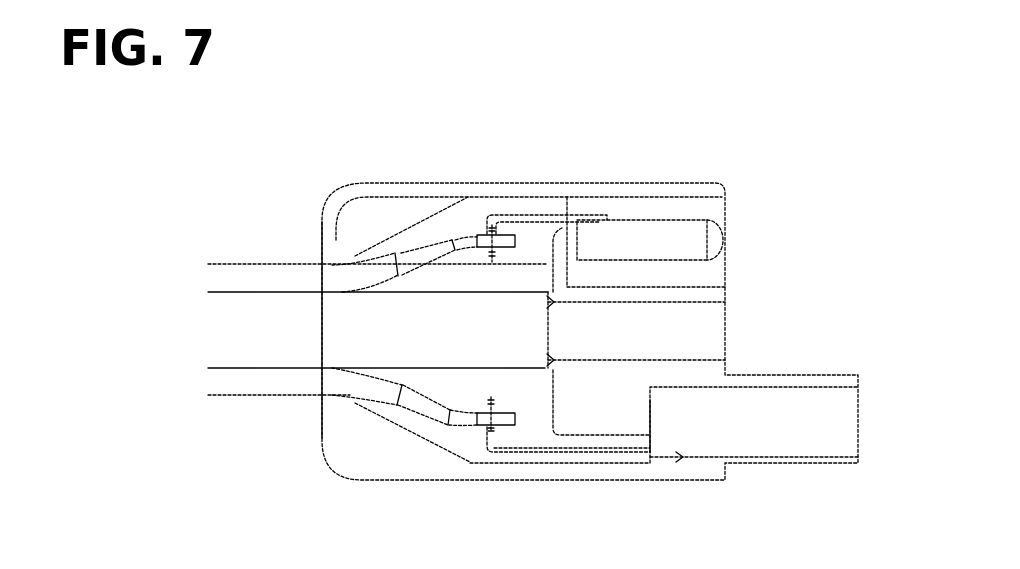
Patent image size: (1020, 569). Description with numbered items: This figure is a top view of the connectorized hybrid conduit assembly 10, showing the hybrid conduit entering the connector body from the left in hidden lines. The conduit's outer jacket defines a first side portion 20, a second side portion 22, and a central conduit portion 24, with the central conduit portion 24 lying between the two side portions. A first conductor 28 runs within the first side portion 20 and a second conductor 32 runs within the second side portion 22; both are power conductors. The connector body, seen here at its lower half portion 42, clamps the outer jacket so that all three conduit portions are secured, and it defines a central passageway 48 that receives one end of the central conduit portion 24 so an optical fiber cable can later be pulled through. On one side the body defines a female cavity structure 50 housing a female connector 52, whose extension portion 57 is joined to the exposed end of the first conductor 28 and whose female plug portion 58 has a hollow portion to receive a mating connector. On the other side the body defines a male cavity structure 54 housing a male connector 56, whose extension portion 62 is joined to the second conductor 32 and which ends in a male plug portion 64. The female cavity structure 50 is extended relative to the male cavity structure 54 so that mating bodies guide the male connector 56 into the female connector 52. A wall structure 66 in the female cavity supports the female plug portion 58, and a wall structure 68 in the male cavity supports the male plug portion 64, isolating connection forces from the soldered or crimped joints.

The connectorized hybrid conduit assembly 10 is at (590, 122).
The first side portion 20 is at (308, 382).
The second side portion 22 is at (232, 282).
The central conduit portion 24 is at (245, 322).
The first conductor 28 is at (435, 413).
The second conductor 32 is at (432, 253).
The lower half portion 42 is at (357, 450).
The central passageway 48 is at (690, 337).
The female cavity structure 50 is at (462, 432).
The female connector 52 is at (617, 450).
The male cavity structure 54 is at (462, 215).
The male connector 56 is at (655, 232).
The extension portion 57 is at (580, 450).
The female plug portion 58 is at (842, 432).
The extension portion 62 is at (517, 217).
The male plug portion 64 is at (600, 235).
The wall structure 66 is at (650, 423).
The wall structure 68 is at (567, 267).